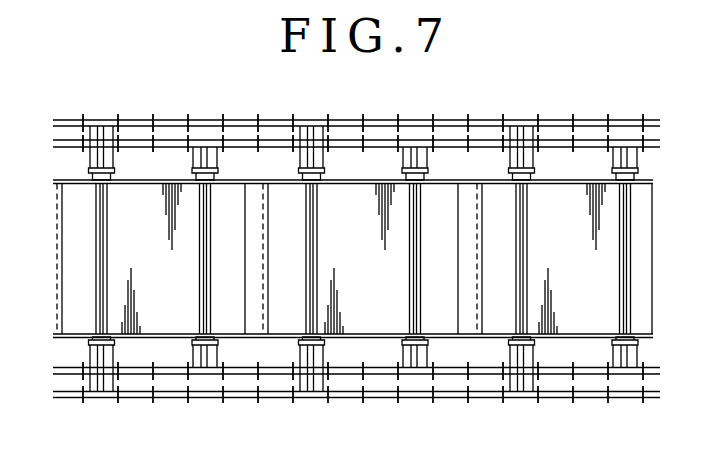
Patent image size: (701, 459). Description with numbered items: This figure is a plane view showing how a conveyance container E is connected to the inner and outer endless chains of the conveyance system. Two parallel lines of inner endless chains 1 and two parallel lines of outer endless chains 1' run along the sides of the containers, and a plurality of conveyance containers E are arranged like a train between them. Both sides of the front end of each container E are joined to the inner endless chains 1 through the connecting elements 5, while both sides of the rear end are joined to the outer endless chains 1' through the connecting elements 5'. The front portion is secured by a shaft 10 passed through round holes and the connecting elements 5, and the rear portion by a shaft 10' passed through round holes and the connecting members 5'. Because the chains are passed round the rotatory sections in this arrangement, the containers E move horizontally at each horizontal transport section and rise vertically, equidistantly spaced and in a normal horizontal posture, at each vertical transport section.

The outer endless chains 1' is at (356, 104).
The inner endless chains 1 is at (356, 159).
The connecting elements 5' is at (312, 281).
The connecting elements 5 is at (415, 291).
The shaft 10' is at (311, 258).
The shaft 10 is at (415, 258).
The conveyance container E is at (447, 338).